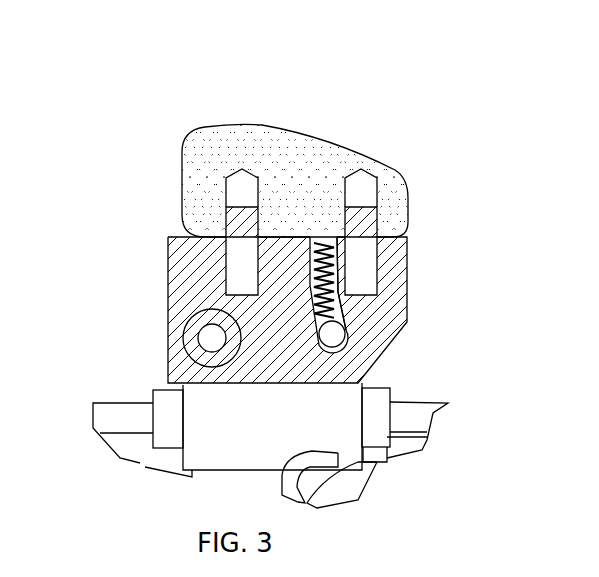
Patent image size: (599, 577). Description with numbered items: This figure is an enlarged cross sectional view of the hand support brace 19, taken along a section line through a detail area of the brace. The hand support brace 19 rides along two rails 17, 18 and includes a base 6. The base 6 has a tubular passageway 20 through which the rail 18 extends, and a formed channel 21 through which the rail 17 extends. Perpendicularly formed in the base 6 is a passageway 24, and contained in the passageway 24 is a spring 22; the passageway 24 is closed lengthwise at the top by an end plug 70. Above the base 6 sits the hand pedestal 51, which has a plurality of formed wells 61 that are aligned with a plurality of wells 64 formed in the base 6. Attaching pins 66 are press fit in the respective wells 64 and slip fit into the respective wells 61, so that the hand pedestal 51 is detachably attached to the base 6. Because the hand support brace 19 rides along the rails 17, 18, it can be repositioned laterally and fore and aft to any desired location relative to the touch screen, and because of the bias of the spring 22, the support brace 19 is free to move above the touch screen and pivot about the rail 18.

The hand support brace 19 is at (358, 113).
The hand pedestal 51 is at (264, 125).
The wells 61 is at (224, 180).
The attaching pins 66 is at (242, 232).
The wells 64 is at (227, 270).
The passageway 24 is at (343, 244).
The end plug 70 is at (345, 242).
The spring 22 is at (343, 267).
The formed channel 21 is at (380, 305).
The rail 17 is at (343, 332).
The rail 18 is at (197, 330).
The tubular passageway 20 is at (184, 345).
The base 6 is at (165, 332).